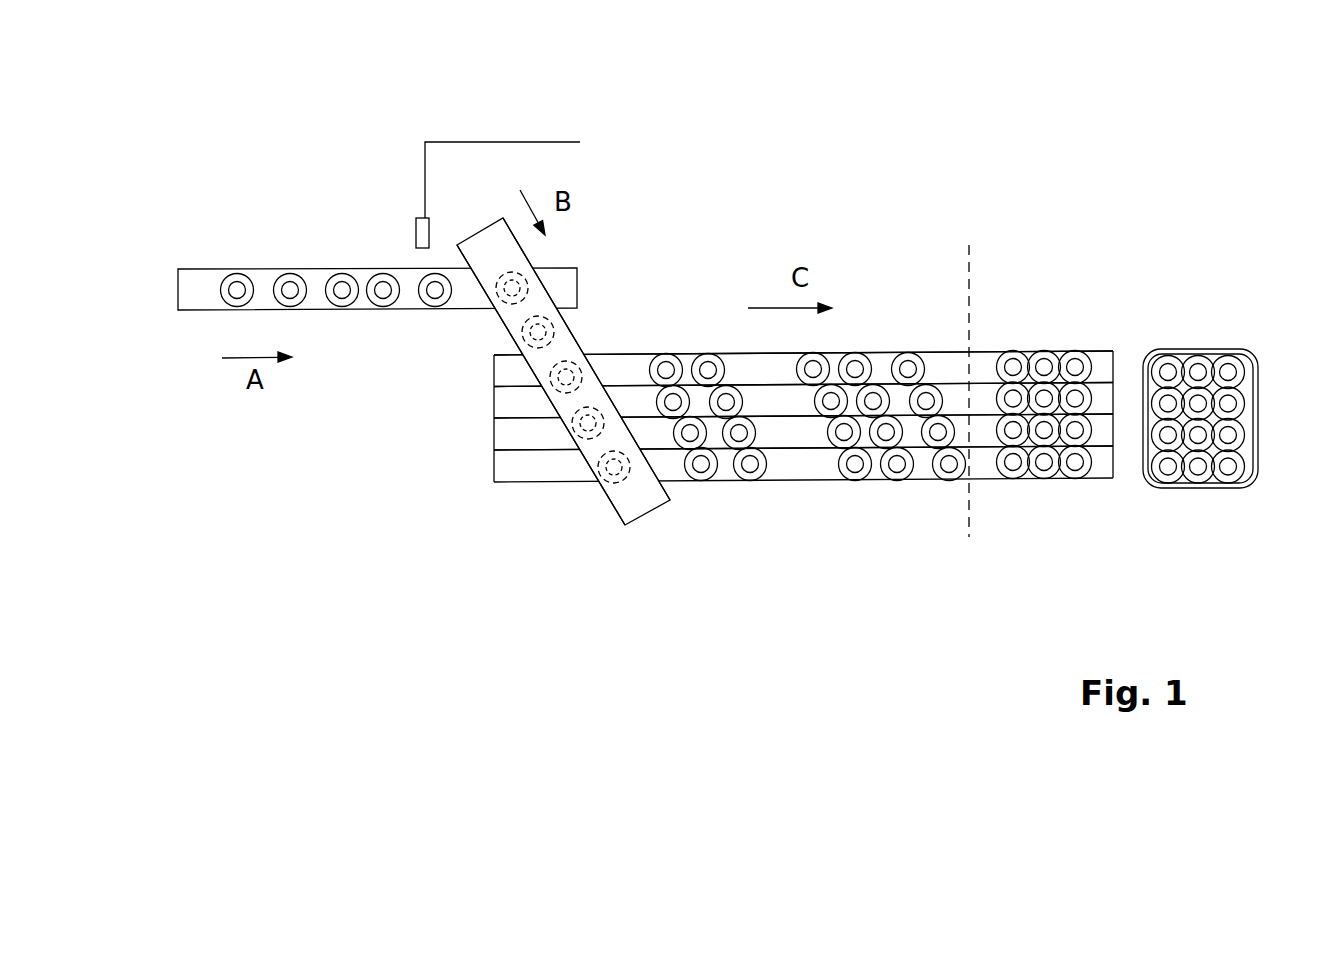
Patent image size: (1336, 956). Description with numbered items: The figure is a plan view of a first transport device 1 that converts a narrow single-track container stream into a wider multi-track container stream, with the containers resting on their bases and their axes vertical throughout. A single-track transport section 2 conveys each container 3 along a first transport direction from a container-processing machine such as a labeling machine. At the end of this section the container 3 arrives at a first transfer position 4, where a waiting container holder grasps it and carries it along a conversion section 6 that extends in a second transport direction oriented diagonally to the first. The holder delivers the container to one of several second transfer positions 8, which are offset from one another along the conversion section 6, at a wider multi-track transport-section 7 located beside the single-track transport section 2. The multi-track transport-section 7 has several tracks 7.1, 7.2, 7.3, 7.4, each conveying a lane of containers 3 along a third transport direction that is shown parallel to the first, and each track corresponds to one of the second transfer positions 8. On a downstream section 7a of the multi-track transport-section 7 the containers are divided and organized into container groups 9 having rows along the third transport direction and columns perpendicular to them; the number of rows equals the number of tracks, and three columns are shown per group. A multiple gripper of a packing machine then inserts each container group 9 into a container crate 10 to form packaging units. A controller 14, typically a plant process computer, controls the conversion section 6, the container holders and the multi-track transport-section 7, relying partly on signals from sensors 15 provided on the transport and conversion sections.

The first transport device 1 is at (948, 120).
The single-track transport section 2 is at (248, 268).
The container 3 is at (382, 288).
The first transfer position 4 is at (546, 276).
The conversion section 6 is at (628, 512).
The multi-track transport-section 7 is at (849, 499).
The track 7.1 is at (508, 369).
The track 7.2 is at (493, 401).
The track 7.3 is at (508, 432).
The track 7.4 is at (517, 463).
The downstream section 7a is at (1019, 499).
The second transfer position 8 is at (597, 350).
The container group 9 is at (1094, 488).
The container crate 10 is at (1247, 485).
The controller 14 is at (521, 173).
The sensor 15 is at (415, 227).